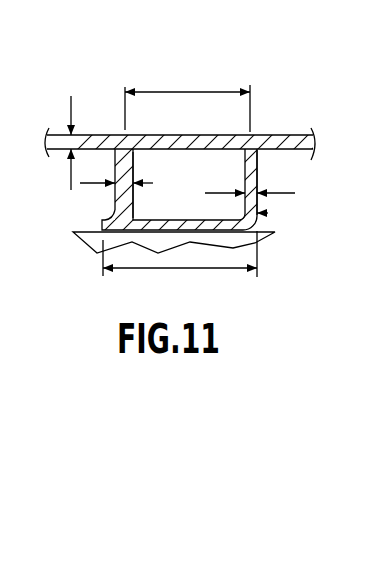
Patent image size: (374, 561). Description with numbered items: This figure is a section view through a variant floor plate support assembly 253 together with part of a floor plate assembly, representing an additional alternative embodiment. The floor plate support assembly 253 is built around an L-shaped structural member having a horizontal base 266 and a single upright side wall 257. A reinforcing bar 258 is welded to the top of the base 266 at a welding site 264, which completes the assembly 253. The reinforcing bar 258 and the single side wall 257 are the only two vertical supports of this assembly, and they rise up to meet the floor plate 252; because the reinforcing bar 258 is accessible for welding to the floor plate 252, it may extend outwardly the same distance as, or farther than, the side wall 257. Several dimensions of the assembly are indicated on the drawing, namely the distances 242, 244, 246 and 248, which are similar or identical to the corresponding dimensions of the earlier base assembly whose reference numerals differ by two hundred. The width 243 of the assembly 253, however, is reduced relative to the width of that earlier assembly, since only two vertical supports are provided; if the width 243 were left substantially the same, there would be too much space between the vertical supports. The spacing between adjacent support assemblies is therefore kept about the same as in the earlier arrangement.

The distance 242 is at (71, 103).
The width 243 is at (184, 269).
The distance 244 is at (222, 194).
The distance 246 is at (186, 92).
The distance 248 is at (150, 182).
The floor plate 252 is at (291, 134).
The floor plate support assembly 253 is at (268, 213).
The single side wall 257 is at (258, 176).
The reinforcing bar 258 is at (136, 163).
The welding site 264 is at (112, 217).
The base 266 is at (138, 243).